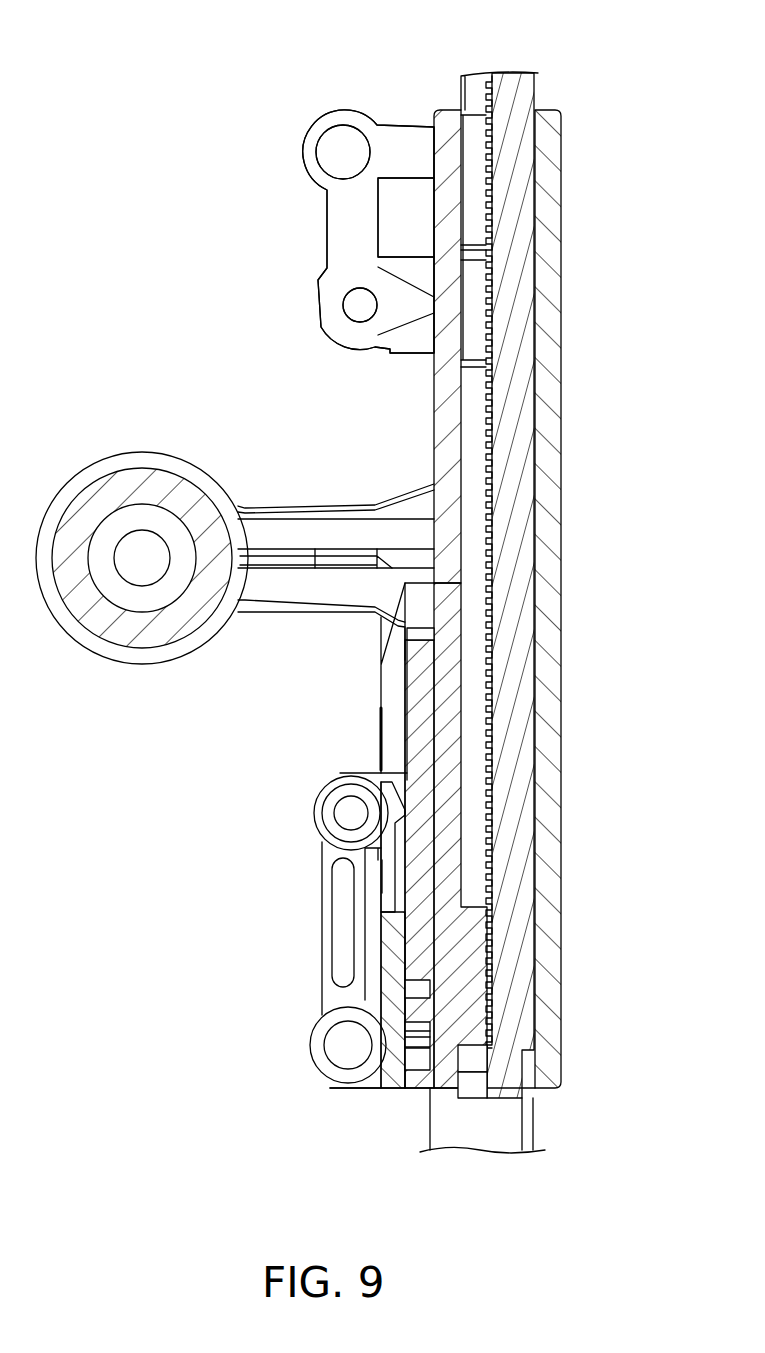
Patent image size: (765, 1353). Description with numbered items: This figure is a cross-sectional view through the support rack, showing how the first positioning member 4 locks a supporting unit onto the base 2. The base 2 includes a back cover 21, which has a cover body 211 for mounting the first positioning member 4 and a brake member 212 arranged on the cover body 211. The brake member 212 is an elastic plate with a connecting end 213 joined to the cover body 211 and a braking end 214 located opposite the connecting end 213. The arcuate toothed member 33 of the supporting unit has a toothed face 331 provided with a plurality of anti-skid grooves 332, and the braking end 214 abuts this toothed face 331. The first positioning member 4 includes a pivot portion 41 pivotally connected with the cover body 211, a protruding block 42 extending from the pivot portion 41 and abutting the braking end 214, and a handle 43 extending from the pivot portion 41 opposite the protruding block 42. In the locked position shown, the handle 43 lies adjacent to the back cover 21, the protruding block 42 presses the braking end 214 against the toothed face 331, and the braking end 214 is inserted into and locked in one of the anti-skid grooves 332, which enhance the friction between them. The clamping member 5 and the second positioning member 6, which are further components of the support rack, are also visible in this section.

The base 2 is at (597, 553).
The clamping member 5 is at (507, 72).
The second positioning member 6 is at (276, 150).
The toothed member 33 is at (420, 727).
The toothed face 331 is at (405, 634).
The anti-skid grooves 332 is at (407, 700).
The braking end 214 is at (380, 773).
The first positioning member 4 is at (300, 933).
The protruding block 42 is at (383, 813).
The pivot portion 41 is at (332, 812).
The brake member 212 is at (390, 842).
The connecting end 213 is at (390, 898).
The cover body 211 is at (390, 937).
The handle 43 is at (337, 983).
The back cover 21 is at (387, 1000).